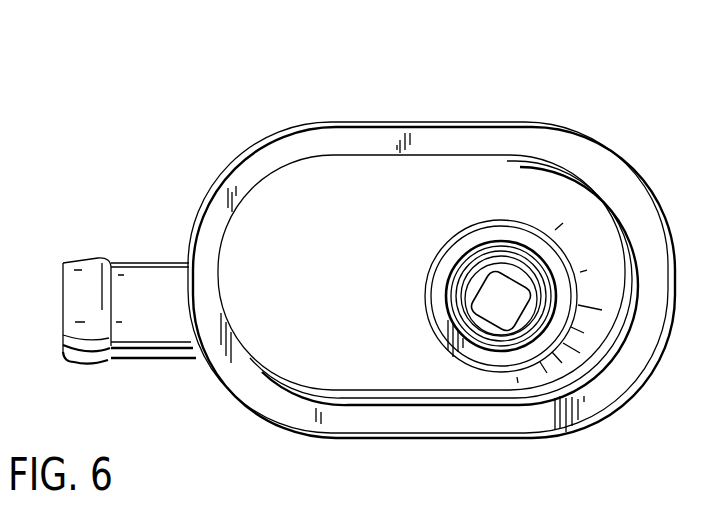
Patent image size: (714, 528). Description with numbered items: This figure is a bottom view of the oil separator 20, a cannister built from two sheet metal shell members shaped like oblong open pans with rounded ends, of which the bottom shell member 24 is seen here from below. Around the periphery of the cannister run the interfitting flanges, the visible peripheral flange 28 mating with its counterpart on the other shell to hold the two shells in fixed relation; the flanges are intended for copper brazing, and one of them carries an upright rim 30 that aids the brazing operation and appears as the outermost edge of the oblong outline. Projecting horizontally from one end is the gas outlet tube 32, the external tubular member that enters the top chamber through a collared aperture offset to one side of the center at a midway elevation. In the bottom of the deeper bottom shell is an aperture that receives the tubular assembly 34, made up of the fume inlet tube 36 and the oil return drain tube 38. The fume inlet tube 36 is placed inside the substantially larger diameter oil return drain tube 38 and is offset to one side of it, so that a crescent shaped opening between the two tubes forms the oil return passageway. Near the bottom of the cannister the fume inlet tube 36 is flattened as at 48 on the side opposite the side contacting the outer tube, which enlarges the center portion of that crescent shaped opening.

The oil separator 20 is at (233, 147).
The shell member 24 is at (385, 177).
The peripheral flange 28 is at (335, 140).
The upright rim 30 is at (493, 122).
The gas outlet tube 32 is at (152, 264).
The tubular assembly 34 is at (539, 331).
The fume inlet tube 36 is at (517, 273).
The oil return drain tube 38 is at (470, 262).
The flattened lower end 48 is at (470, 298).